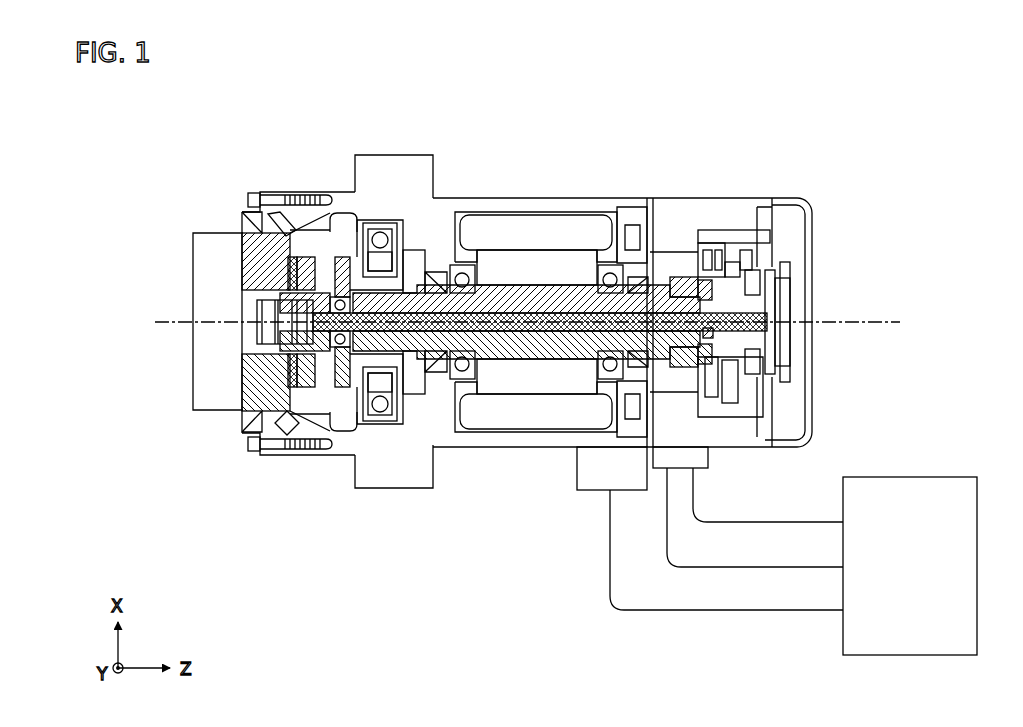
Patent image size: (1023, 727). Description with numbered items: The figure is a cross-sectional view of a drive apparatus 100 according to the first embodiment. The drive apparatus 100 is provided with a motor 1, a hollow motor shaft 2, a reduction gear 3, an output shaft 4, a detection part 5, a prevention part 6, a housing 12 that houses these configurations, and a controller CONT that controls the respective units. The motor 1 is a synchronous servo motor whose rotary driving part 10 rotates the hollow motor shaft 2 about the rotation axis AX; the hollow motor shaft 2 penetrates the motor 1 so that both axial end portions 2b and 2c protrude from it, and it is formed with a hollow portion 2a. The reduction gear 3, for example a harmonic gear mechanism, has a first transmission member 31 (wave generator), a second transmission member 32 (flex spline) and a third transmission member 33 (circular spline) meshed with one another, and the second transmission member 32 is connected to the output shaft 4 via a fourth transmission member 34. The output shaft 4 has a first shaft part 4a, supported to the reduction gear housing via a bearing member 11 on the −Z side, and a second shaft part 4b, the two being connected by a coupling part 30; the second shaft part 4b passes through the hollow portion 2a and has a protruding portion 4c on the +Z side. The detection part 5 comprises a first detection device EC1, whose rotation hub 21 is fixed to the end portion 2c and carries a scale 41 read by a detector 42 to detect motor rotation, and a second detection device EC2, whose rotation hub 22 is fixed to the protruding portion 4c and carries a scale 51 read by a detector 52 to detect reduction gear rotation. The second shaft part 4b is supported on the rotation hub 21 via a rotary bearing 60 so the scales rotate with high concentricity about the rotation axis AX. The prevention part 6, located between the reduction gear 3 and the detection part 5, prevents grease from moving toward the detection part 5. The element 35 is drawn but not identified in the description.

The drive apparatus 100 is at (850, 122).
The motor 1 is at (602, 328).
The hollow motor shaft 2 is at (512, 306).
The hollow portion 2a is at (522, 330).
The end portion 2b is at (400, 295).
The end portion 2c is at (682, 300).
The reduction gear 3 is at (352, 493).
The output shaft 4 is at (320, 379).
The first shaft part 4a is at (210, 398).
The second shaft part 4b is at (430, 340).
The protruding portion 4c is at (708, 334).
The detection part 5 is at (745, 229).
The prevention part 6 is at (329, 280).
The driving part 10 is at (503, 232).
The bearing member 11 is at (275, 232).
The housing 12 is at (545, 198).
The rotation hub 21 is at (690, 277).
The rotation hub 22 is at (752, 285).
The coupling part 30 is at (267, 343).
The first transmission member 31 is at (342, 250).
The second transmission member 32 is at (308, 262).
The third transmission member 33 is at (368, 222).
The fourth transmission member 34 is at (250, 257).
The friction plate 35 is at (293, 258).
The scale 41 is at (723, 380).
The detector 42 is at (737, 392).
The scale 51 is at (773, 348).
The detector 52 is at (784, 360).
The rotary bearing 60 is at (726, 232).
The first detection device EC1 is at (745, 258).
The second detection device EC2 is at (787, 258).
The rotation axis AX is at (872, 322).
The controller CONT is at (905, 480).